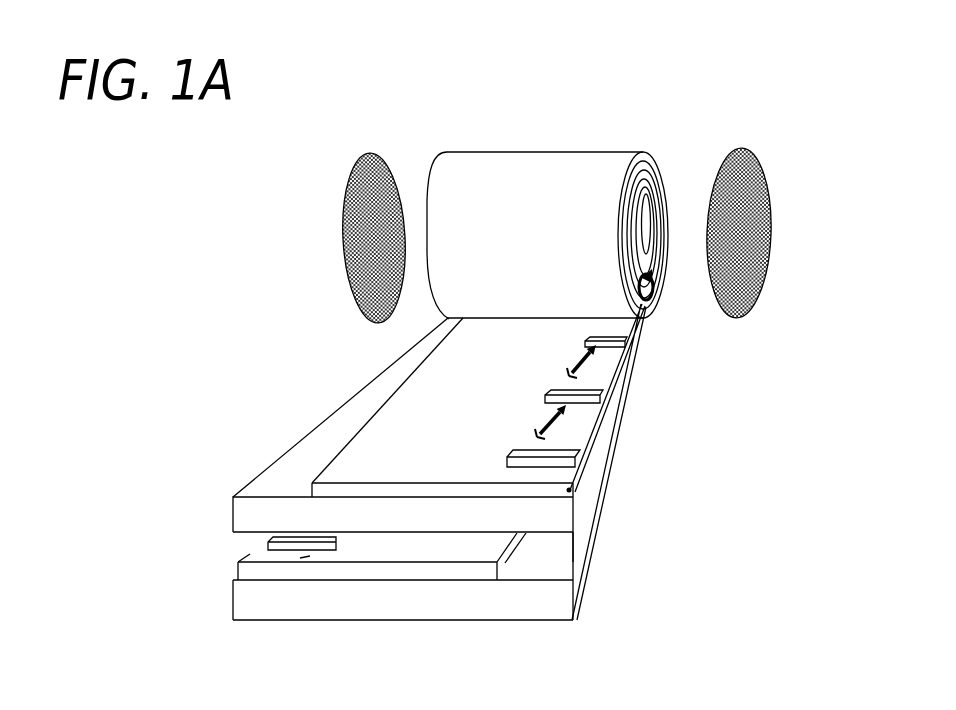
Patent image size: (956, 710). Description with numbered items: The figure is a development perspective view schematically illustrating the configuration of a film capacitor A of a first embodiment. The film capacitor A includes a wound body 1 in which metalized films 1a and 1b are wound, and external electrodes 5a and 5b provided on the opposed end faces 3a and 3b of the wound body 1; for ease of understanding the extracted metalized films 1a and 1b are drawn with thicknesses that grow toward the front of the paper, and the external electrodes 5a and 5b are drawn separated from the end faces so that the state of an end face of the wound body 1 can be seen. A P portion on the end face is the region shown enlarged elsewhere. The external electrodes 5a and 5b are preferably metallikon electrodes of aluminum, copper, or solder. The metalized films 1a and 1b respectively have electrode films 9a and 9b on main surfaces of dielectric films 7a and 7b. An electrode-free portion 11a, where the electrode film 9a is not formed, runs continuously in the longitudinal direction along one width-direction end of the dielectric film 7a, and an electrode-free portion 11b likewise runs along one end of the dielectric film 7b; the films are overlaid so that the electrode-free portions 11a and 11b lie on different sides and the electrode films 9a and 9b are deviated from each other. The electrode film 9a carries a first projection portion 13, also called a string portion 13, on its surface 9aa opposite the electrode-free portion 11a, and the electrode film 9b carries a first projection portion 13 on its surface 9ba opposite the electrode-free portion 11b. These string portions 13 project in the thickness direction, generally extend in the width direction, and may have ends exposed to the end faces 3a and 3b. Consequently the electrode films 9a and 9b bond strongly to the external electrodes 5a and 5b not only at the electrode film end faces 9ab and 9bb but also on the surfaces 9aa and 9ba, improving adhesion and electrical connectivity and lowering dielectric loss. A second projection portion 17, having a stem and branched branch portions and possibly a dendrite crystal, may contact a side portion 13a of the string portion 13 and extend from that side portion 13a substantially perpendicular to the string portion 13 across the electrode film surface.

The wound body 1 is at (568, 154).
The metalized film 1a is at (665, 465).
The metalized film 1b is at (690, 555).
The end face 3a is at (652, 178).
The end face 3b is at (429, 190).
The external electrode 5a is at (753, 183).
The external electrode 5b is at (347, 186).
The dielectric film 7a is at (553, 518).
The dielectric film 7b is at (552, 602).
The electrode film 9a is at (562, 490).
The electrode film surface 9aa is at (603, 367).
The electrode film end face 9ab is at (612, 379).
The electrode film 9b is at (490, 577).
The electrode film surface 9ba is at (308, 556).
The electrode film end face 9bb is at (236, 576).
The electrode-free portion 11a is at (292, 448).
The electrode-free portion 11b is at (563, 554).
The first projection portion 13 is at (583, 453).
The side portion 13a is at (588, 338).
The second projection portion 17 is at (582, 358).
The film capacitor A is at (638, 113).
The P portion P is at (656, 291).